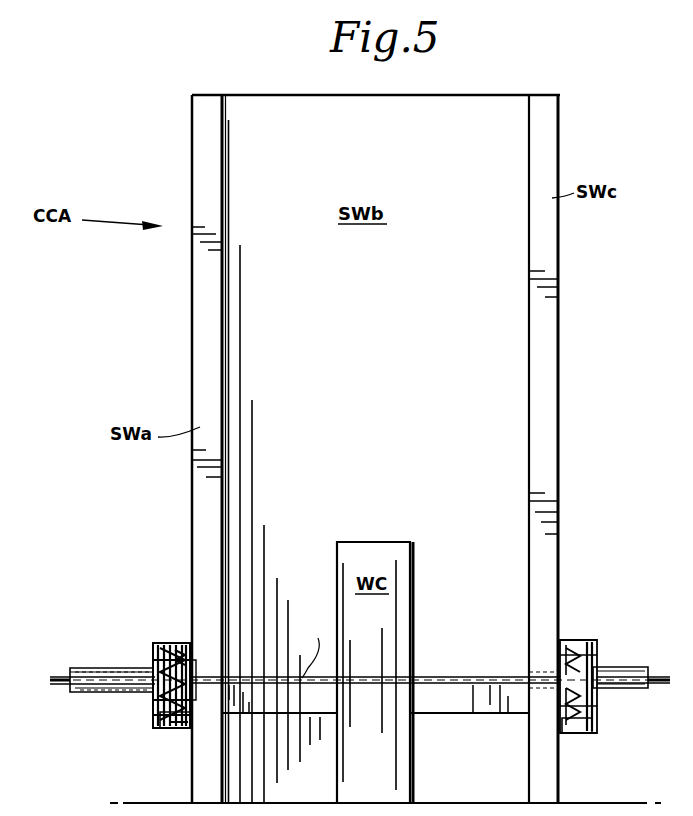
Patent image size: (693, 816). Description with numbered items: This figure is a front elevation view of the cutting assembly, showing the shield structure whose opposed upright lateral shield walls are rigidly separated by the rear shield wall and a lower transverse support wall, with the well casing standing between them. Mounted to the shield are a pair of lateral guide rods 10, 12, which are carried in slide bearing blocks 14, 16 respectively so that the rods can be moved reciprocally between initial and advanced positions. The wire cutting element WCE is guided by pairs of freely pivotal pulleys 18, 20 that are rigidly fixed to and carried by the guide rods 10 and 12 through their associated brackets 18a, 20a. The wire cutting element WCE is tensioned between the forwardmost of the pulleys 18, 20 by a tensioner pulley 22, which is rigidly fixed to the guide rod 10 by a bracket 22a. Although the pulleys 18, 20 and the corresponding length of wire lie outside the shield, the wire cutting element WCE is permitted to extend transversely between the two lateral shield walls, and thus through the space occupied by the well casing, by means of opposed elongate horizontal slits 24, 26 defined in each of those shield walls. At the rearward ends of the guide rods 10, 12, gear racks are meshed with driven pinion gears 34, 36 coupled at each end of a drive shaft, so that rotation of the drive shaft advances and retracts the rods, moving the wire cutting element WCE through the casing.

The lateral guide rod 10 is at (155, 692).
The lateral guide rod 12 is at (591, 668).
The slide bearing block 14 is at (176, 642).
The slide bearing block 16 is at (573, 646).
The pulleys 18 is at (125, 694).
The bracket 18a is at (131, 669).
The pulleys 20 is at (661, 688).
The bracket 20a is at (631, 676).
The tensioner pulley 22 is at (60, 686).
The bracket 22a is at (78, 670).
The elongate horizontal slit 24 is at (204, 680).
The elongate horizontal slit 26 is at (528, 670).
The driven pinion gear 34 is at (172, 736).
The driven pinion gear 36 is at (590, 730).
The wire cutting element WCE is at (375, 665).